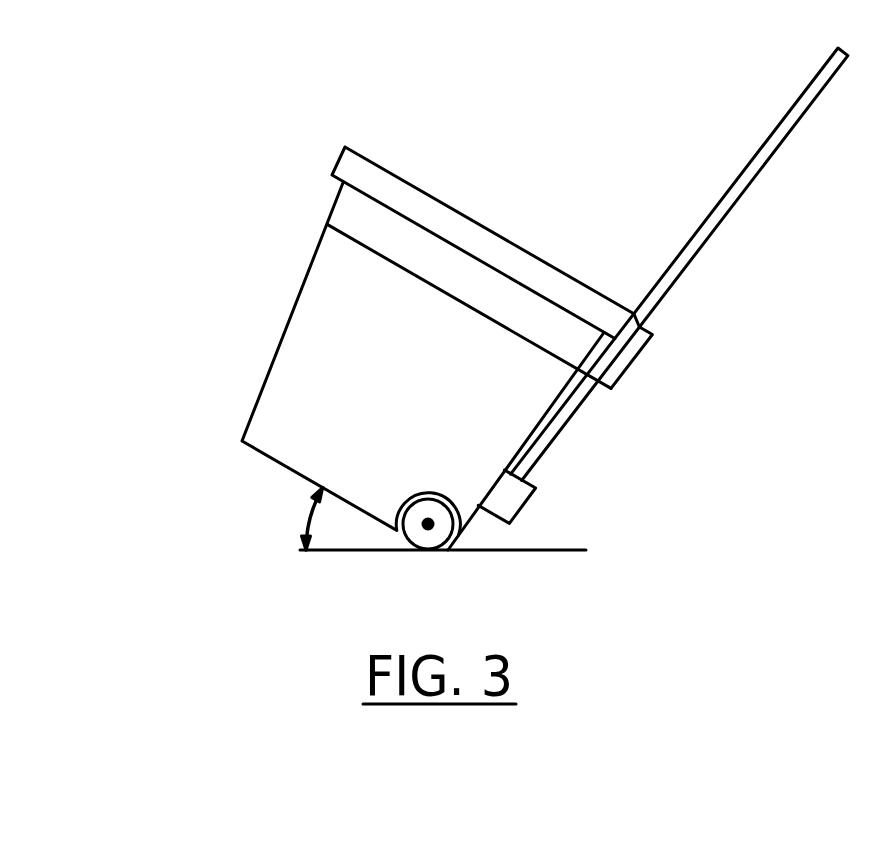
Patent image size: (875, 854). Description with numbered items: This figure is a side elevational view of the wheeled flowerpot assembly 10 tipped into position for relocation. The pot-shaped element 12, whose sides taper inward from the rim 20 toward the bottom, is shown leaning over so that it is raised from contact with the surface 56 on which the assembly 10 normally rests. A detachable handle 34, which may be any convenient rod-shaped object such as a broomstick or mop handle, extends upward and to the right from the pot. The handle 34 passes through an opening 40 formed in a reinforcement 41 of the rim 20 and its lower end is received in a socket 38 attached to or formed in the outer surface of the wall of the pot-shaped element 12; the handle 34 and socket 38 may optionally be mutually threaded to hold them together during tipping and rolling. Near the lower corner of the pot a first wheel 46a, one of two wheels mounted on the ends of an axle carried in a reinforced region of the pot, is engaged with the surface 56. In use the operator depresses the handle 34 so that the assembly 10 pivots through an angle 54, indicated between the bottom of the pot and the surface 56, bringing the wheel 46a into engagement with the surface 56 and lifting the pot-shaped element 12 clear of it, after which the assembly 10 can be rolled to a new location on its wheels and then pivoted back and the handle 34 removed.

The wheeled flowerpot assembly 10 is at (553, 166).
The pot-shaped element 12 is at (277, 356).
The rim 20 is at (513, 265).
The handle 34 is at (712, 233).
The socket 38 is at (533, 493).
The opening 40 is at (645, 327).
The reinforcement 41 is at (632, 362).
The first wheel 46a is at (433, 539).
The angle 54 is at (305, 530).
The surface 56 is at (367, 549).